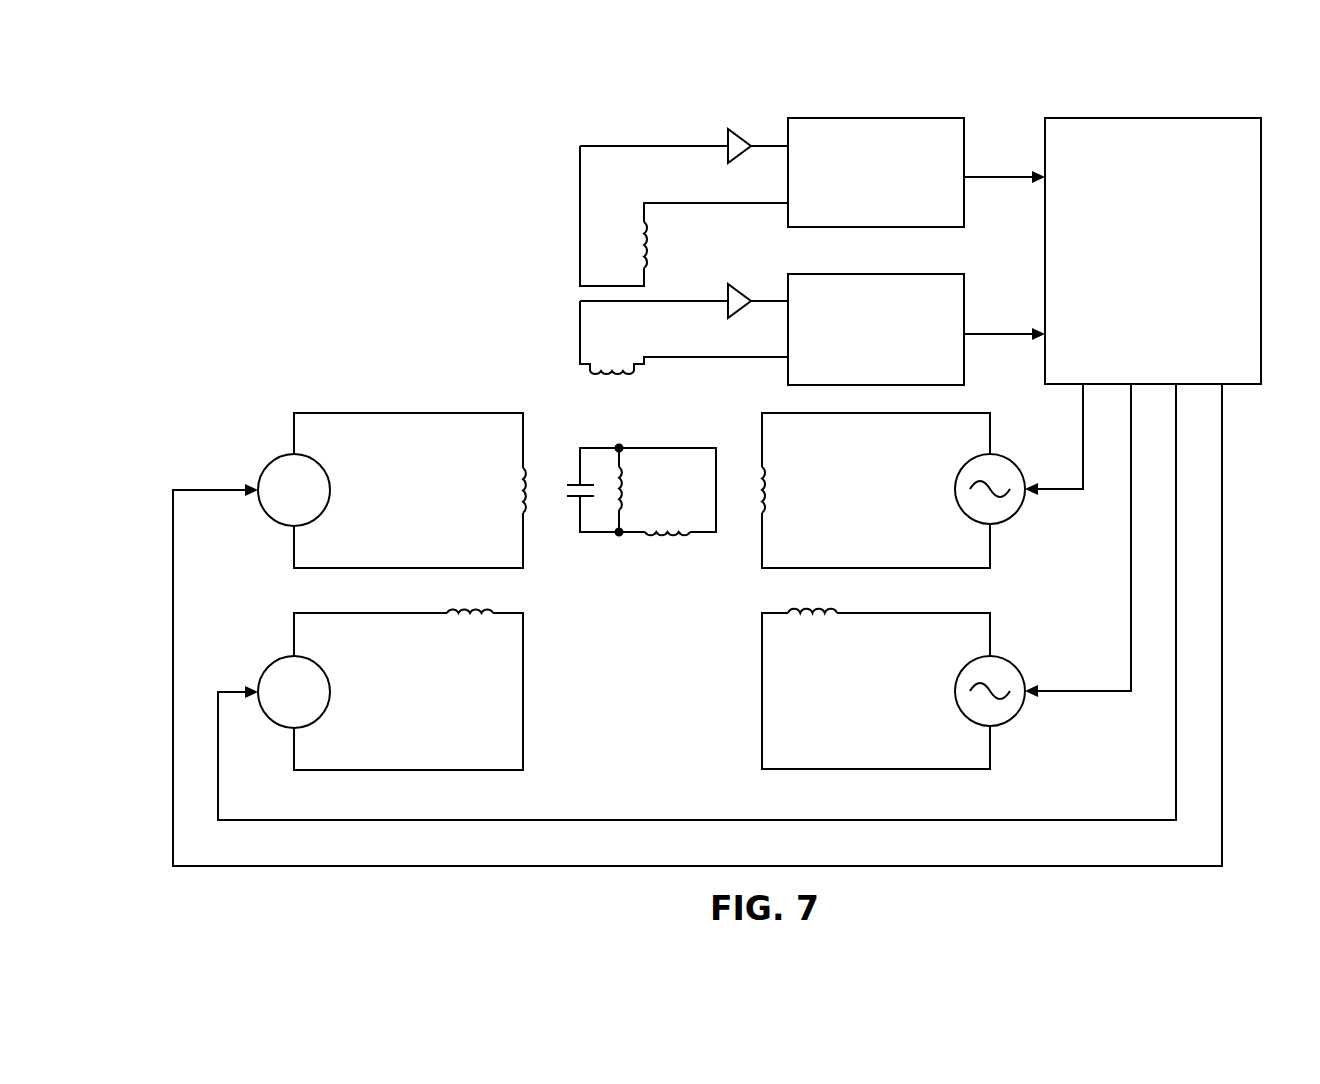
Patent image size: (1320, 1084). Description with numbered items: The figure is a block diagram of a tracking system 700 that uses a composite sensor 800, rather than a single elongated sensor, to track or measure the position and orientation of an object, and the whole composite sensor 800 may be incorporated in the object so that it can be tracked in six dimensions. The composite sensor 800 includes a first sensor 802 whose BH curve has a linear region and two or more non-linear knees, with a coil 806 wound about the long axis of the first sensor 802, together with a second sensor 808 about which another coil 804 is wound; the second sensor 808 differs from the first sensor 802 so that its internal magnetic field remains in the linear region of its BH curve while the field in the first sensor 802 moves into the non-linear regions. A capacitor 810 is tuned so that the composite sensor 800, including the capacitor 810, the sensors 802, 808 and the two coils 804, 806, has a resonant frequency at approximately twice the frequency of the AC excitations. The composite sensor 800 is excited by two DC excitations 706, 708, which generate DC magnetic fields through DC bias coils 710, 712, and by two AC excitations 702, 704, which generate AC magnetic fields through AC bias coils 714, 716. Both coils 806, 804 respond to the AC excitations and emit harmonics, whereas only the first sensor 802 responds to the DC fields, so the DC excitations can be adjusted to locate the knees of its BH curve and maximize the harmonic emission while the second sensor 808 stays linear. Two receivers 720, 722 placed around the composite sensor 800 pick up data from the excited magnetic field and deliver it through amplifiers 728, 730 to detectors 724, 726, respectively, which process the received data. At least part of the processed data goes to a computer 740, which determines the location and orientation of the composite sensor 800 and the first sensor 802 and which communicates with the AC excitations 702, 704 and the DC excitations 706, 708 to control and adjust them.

The system 700 is at (333, 212).
The AC excitation 702 is at (972, 458).
The AC excitation 704 is at (972, 659).
The DC excitation 706 is at (277, 457).
The DC excitation 708 is at (277, 657).
The DC bias coil 710 is at (520, 488).
The DC bias coil 712 is at (468, 613).
The AC bias coil 714 is at (765, 487).
The AC bias coil 716 is at (812, 613).
The receiver 720 is at (608, 367).
The receiver 722 is at (647, 237).
The detector 724 is at (837, 273).
The detector 726 is at (837, 117).
The amplifier 728 is at (727, 293).
The amplifier 730 is at (727, 140).
The computer 740 is at (1095, 117).
The composite sensor 800 is at (635, 494).
The first sensor 802 is at (617, 487).
The coil 804 is at (667, 538).
The coil 806 is at (619, 448).
The second sensor 808 is at (648, 537).
The capacitor 810 is at (573, 498).